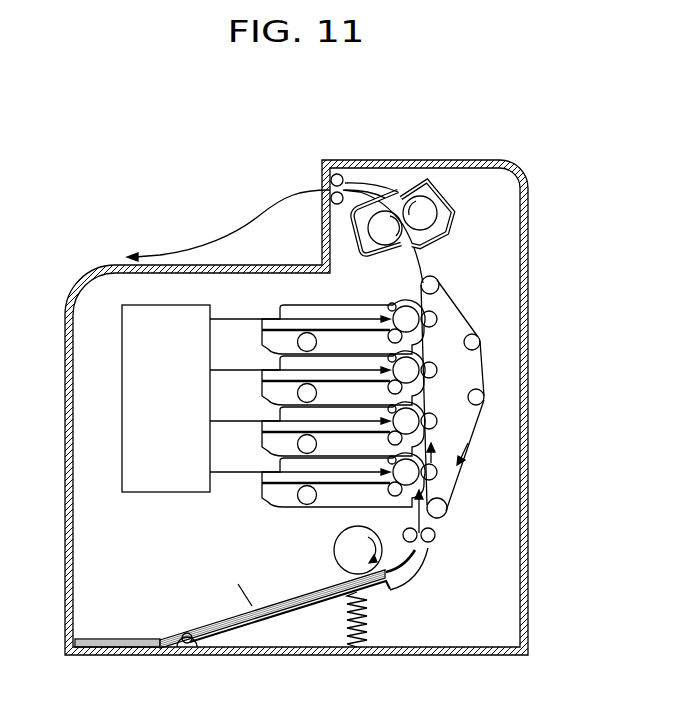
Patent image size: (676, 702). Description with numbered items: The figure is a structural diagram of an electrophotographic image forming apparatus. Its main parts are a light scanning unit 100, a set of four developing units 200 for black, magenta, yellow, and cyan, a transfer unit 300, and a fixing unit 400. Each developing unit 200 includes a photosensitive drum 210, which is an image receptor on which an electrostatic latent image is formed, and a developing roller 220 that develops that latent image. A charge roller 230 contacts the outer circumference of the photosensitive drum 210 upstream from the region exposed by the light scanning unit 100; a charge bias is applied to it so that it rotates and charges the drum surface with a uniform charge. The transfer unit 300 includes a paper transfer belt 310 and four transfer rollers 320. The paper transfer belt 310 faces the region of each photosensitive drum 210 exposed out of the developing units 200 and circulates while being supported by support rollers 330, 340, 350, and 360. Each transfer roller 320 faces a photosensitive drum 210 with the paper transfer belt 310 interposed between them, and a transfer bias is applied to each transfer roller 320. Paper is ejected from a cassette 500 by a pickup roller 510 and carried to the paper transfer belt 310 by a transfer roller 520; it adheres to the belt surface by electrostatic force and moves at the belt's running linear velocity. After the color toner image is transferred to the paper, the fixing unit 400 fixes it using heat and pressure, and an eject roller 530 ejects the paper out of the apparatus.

The light scanning unit 100 is at (112, 402).
The developing unit 200 is at (317, 372).
The photosensitive drum 210 is at (406, 313).
The developing roller 220 is at (388, 332).
The charge roller 230 is at (389, 304).
The transfer unit 300 is at (502, 386).
The paper transfer belt 310 is at (456, 312).
The transfer roller 320 is at (443, 473).
The support roller 330 is at (447, 513).
The support roller 340 is at (441, 287).
The support roller 350 is at (485, 398).
The support roller 360 is at (481, 343).
The fixing unit 400 is at (472, 215).
The cassette 500 is at (255, 569).
The pickup roller 510 is at (352, 550).
The transfer roller 520 is at (404, 532).
The eject roller 530 is at (337, 173).